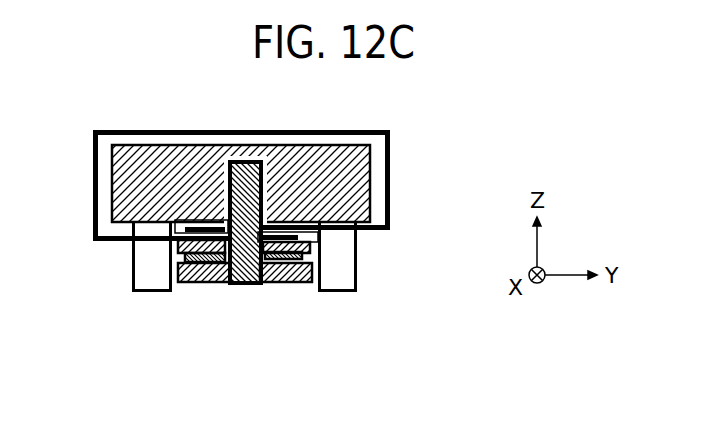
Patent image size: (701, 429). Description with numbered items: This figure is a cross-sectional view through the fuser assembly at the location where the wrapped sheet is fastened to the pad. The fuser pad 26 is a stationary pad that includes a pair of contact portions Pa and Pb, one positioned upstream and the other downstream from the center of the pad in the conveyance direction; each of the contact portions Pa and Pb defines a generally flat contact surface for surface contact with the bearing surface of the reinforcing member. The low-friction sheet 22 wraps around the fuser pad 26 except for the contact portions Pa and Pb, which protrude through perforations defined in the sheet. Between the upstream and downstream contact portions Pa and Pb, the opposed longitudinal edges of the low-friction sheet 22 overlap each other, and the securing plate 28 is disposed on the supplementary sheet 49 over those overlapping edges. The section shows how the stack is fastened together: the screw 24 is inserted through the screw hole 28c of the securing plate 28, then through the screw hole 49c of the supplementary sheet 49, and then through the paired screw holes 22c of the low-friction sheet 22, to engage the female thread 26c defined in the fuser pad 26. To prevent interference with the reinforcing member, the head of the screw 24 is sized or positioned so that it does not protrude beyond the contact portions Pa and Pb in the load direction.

The low-friction sheet 22 is at (94, 182).
The screw holes of the low-friction sheet 22c is at (250, 218).
The fuser pad 26 is at (355, 185).
The female thread 26c is at (258, 184).
The downstream contact portion Pb is at (132, 256).
The upstream contact portion Pa is at (358, 258).
The supplementary sheet 49 is at (186, 247).
The screw hole of the supplementary sheet 49c is at (258, 252).
The screw hole of the securing plate 28c is at (222, 258).
The securing plate 28 is at (303, 258).
The screw 24 is at (291, 271).